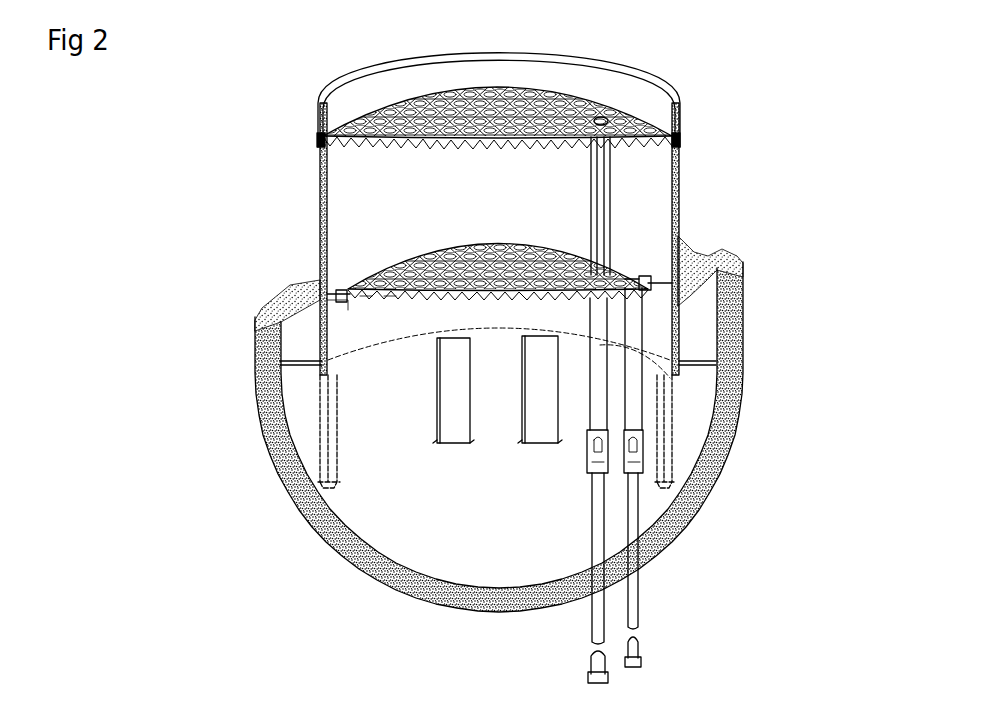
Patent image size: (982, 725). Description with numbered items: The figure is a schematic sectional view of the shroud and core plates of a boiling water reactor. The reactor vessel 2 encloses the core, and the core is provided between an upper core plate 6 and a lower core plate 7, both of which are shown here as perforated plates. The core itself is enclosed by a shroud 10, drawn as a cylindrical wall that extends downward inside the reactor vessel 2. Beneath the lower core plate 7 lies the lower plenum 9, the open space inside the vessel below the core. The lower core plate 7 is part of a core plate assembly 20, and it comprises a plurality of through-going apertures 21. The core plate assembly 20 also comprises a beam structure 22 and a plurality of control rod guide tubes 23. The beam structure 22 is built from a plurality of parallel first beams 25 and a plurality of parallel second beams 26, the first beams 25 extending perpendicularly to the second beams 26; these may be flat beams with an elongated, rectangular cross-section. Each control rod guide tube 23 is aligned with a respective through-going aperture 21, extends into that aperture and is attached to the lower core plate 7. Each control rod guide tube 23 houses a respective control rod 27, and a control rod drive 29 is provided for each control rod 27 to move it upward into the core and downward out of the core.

The reactor vessel 2 is at (680, 507).
The upper core plate 6 is at (377, 137).
The lower core plate 7 is at (407, 272).
The lower plenum 9 is at (505, 399).
The shroud 10 is at (323, 166).
The core plate assembly 20 is at (660, 266).
The through-going apertures 21 is at (363, 282).
The beam structure 22 is at (340, 313).
The control rod guide tubes 23 is at (598, 405).
The first beams 25 is at (367, 300).
The second beams 26 is at (390, 300).
The control rod 27 is at (600, 198).
The control rod drive 29 is at (632, 617).